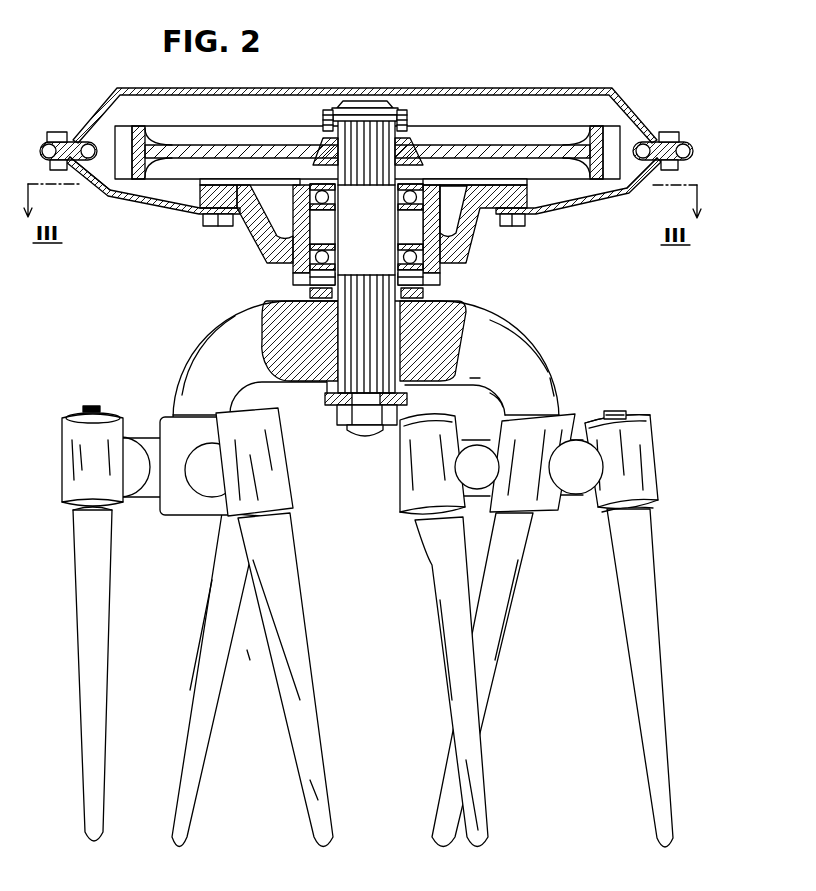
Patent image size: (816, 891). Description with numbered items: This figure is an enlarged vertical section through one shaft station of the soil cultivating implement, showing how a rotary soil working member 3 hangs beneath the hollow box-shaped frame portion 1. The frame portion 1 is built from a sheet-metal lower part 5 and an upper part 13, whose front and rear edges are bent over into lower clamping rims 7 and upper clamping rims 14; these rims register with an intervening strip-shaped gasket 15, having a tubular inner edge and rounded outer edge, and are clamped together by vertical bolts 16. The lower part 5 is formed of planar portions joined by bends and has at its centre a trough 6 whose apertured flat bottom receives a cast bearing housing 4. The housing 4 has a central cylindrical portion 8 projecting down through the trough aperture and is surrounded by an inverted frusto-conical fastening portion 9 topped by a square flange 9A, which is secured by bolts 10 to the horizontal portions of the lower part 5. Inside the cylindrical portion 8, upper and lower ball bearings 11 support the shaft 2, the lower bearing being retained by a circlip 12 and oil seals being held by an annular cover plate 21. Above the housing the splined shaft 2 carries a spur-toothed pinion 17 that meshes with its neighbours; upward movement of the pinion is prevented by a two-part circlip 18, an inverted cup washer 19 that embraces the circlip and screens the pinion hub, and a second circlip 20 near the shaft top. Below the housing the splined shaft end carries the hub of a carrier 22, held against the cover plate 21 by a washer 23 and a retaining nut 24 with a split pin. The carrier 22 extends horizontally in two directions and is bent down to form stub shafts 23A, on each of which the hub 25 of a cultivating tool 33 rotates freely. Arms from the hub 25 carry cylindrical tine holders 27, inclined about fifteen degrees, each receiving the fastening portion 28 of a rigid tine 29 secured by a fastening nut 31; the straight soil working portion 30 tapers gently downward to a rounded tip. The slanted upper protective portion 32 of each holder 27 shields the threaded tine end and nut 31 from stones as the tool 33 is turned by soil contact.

The frame portion 1 is at (171, 121).
The shaft 2 is at (366, 104).
The rotary soil working member 3 is at (353, 578).
The bearing housing 4 is at (194, 195).
The lower part 5 is at (143, 203).
The trough 6 is at (262, 253).
The lower clamping rim 7 is at (82, 170).
The cylindrical portion 8 is at (448, 226).
The fastening portion 9 is at (470, 260).
The flange 9A is at (557, 212).
The bolt 10 is at (220, 226).
The ball bearing 11 is at (330, 257).
The circlip 12 is at (442, 278).
The upper part 13 is at (540, 93).
The upper clamping rim 14 is at (55, 138).
The gasket 15 is at (46, 152).
The bolt 16 is at (60, 137).
The pinion 17 is at (592, 130).
The circlip 18 is at (323, 118).
The cup washer 19 is at (325, 110).
The second circlip 20 is at (407, 115).
The cover plate 21 is at (305, 295).
The carrier 22 is at (237, 317).
The washer 23 is at (325, 398).
The stub shaft 23A is at (180, 413).
The retaining nut 24 is at (347, 425).
The hub 25 is at (163, 423).
The tine holder 27 is at (66, 460).
The fastening portion 28 is at (97, 406).
The soil working tine 29 is at (120, 630).
The soil working portion 30 is at (100, 683).
The fastening nut 31 is at (633, 416).
The upper protective portion 32 is at (118, 413).
The cultivating tool 33 is at (200, 524).